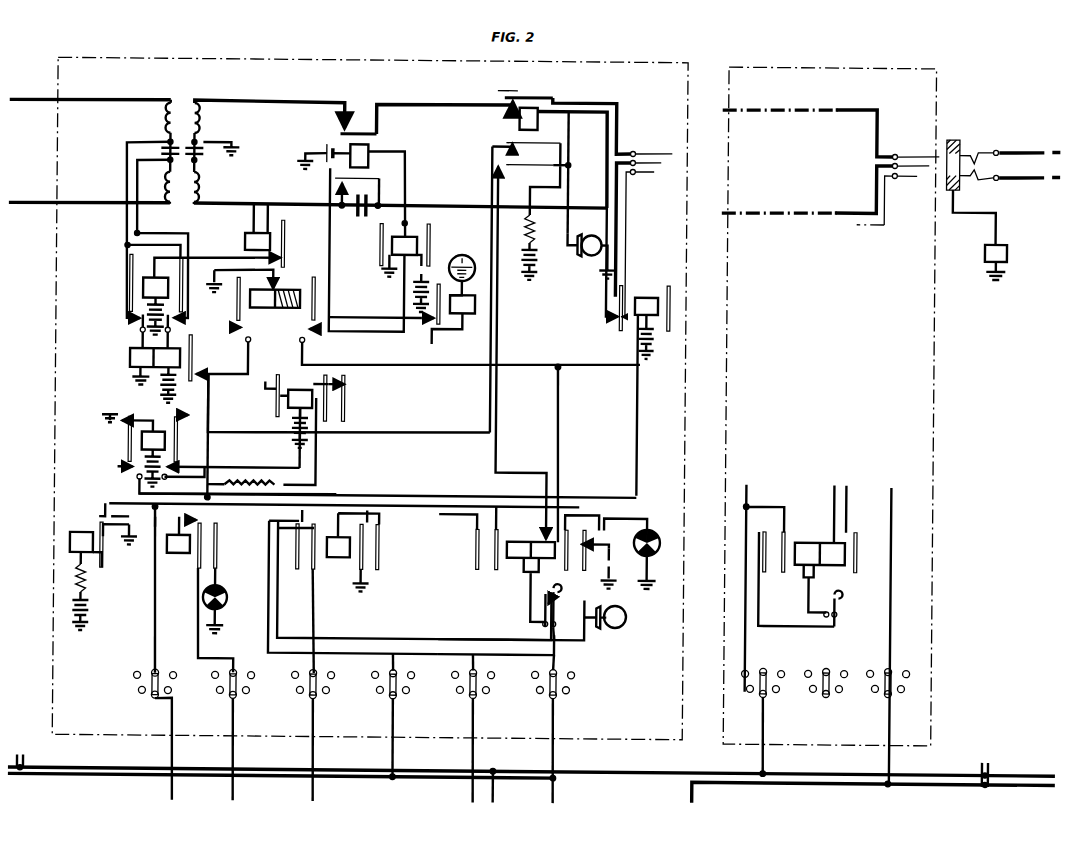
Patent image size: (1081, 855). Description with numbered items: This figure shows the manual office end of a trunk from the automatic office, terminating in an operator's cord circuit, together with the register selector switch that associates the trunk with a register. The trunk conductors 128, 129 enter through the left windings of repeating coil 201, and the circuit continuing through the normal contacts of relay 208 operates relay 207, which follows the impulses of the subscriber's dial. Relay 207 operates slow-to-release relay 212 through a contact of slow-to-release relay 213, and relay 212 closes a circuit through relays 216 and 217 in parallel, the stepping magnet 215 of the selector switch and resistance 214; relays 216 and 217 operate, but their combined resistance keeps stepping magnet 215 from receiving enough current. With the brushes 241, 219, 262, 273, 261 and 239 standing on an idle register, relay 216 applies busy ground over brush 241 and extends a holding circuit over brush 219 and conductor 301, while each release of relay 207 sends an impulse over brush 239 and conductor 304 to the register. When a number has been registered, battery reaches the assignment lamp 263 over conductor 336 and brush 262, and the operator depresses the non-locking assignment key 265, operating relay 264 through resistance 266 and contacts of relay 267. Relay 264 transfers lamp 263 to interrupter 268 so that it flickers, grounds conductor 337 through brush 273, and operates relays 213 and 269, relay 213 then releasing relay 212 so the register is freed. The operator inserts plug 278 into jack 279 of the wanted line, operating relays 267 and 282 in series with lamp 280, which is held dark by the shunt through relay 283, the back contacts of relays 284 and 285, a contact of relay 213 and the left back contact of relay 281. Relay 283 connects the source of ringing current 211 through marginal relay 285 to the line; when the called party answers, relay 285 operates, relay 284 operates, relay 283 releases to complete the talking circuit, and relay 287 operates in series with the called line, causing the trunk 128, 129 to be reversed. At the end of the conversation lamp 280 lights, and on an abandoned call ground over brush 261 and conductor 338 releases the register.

The trunk conductor 128 is at (50, 103).
The trunk conductor 129 is at (50, 206).
The repeating coil 201 is at (184, 104).
The relay 207 is at (130, 358).
The relay 208 is at (142, 290).
The source of ringing current 211 is at (469, 251).
The slow-to-release relay 212 is at (142, 446).
The slow-to-release relay 213 is at (288, 399).
The resistance 214 is at (88, 584).
The stepping magnet 215 is at (82, 536).
The relay 216 is at (180, 556).
The relay 217 is at (338, 560).
The brush 219 is at (235, 672).
The brush 239 is at (563, 678).
The brush 241 is at (153, 672).
The brush 261 is at (480, 678).
The brush 262 is at (310, 676).
The assignment lamp 263 is at (628, 617).
The relay 264 is at (531, 542).
The assignment key 265 is at (532, 616).
The resistance 266 is at (538, 230).
The relay 267 is at (517, 120).
The interrupter 268 is at (646, 530).
The relay 269 is at (283, 310).
The brush 273 is at (391, 677).
The plug 278 is at (645, 150).
The jack 279 is at (966, 146).
The lamp 280 is at (603, 238).
The relay 281 is at (657, 306).
The relay 282 is at (1006, 251).
The relay 283 is at (366, 152).
The relay 284 is at (416, 246).
The marginal relay 285 is at (474, 305).
The relay 287 is at (244, 244).
The conductor 301 is at (237, 792).
The conductor 304 is at (558, 792).
The conductor 336 is at (317, 792).
The conductor 337 is at (498, 792).
The conductor 338 is at (470, 792).